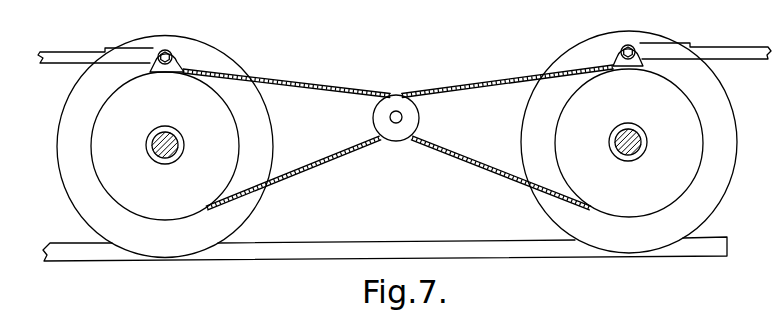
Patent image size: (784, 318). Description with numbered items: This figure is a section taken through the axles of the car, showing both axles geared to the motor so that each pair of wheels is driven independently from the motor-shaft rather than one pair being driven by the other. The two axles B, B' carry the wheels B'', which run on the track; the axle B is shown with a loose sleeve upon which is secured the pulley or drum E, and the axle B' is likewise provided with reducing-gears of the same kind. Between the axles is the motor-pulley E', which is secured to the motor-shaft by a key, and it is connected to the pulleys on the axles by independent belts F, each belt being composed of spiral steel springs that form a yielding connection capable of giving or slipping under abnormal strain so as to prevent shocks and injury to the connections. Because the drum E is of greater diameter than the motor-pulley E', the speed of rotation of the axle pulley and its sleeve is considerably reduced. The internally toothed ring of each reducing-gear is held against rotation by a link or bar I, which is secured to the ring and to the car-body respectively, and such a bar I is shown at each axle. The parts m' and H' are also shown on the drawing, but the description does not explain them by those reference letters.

The link or bar I is at (404, 57).
The motor disc m' is at (165, 146).
The axle B is at (178, 145).
The axle B' is at (640, 142).
The wheels B'' is at (165, 147).
The belt F is at (345, 86).
The pulley or drum E is at (396, 118).
The motor-pulley E' is at (508, 137).
The rail H' is at (385, 249).